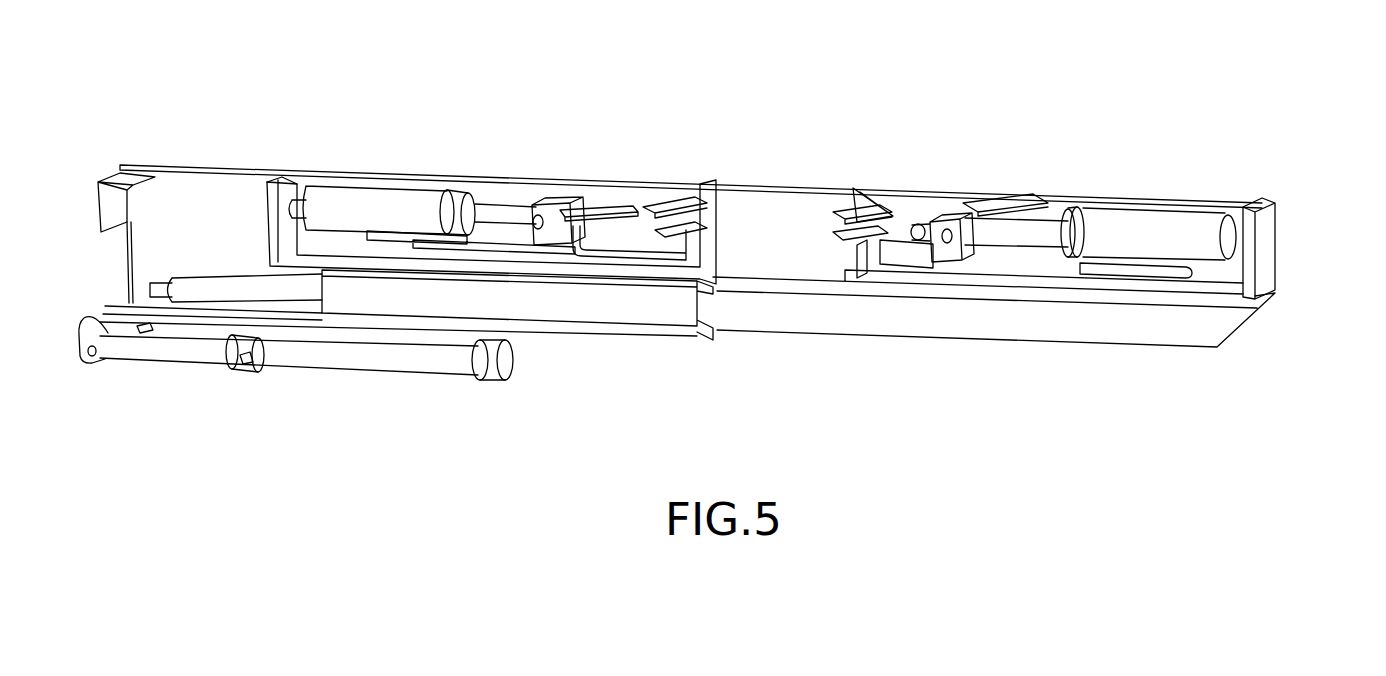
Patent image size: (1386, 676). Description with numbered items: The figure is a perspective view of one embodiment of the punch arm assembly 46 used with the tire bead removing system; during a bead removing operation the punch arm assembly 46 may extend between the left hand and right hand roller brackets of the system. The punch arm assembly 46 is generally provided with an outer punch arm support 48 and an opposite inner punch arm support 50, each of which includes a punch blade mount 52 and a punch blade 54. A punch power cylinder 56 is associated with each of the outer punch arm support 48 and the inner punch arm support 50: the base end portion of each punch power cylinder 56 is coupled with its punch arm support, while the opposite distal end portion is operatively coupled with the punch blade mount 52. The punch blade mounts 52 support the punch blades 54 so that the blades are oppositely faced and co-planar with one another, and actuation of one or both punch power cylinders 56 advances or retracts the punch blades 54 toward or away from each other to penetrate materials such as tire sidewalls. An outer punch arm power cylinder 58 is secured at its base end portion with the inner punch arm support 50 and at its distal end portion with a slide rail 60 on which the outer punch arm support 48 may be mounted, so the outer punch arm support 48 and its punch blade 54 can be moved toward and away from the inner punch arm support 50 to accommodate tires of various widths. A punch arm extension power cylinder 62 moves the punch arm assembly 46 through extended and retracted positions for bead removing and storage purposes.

The punch arm assembly 46 is at (1315, 138).
The outer punch arm support 48 is at (1263, 252).
The inner punch arm support 50 is at (212, 188).
The punch blade mount 52 is at (562, 182).
The punch blade 54 is at (615, 210).
The punch power cylinder 56 is at (405, 195).
The outer punch arm power cylinder 58 is at (203, 298).
The slide rail 60 is at (580, 243).
The punch arm extension power cylinder 62 is at (170, 353).